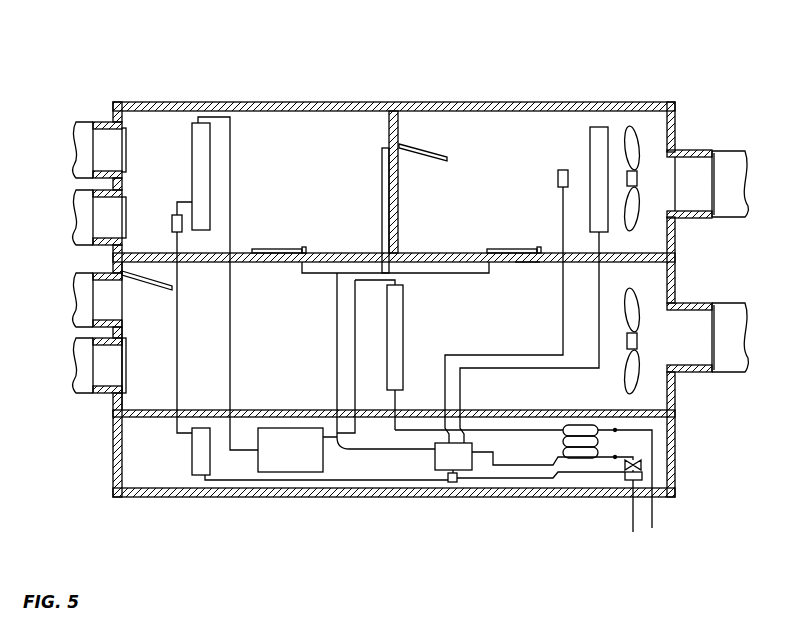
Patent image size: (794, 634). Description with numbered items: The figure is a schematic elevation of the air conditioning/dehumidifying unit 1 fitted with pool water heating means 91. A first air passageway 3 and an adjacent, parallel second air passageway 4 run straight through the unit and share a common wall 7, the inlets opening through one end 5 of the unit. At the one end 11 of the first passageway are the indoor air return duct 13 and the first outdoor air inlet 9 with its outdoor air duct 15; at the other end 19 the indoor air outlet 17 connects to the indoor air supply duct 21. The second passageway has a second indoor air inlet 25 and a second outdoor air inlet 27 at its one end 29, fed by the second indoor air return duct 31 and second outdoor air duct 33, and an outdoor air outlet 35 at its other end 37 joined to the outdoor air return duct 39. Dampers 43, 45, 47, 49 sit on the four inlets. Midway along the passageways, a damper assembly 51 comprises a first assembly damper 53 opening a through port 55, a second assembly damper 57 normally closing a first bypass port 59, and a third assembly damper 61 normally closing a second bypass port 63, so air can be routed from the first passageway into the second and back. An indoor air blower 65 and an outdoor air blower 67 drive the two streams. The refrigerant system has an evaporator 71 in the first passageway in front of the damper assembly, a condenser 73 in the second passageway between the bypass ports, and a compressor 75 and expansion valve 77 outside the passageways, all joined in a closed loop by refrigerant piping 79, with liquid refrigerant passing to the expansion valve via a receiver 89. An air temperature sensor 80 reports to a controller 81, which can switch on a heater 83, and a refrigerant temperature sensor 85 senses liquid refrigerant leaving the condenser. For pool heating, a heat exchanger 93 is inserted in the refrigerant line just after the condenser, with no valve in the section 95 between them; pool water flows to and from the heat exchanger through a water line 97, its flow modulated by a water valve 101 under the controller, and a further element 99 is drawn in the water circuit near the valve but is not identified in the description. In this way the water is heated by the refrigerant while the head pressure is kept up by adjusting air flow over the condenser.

The air conditioning/dehumidifying unit 1 is at (542, 97).
The first air passageway 3 is at (325, 117).
The second air passageway 4 is at (265, 378).
The one end of the unit 5 is at (115, 463).
The common wall 7 is at (93, 163).
The first outdoor air inlet 9 is at (92, 207).
The one end of the first air passageway 11 is at (113, 113).
The indoor air return duct 13 is at (72, 133).
The outdoor air duct 15 is at (82, 248).
The indoor air outlet 17 is at (713, 160).
The other end of the first air passageway 19 is at (673, 130).
The indoor air supply duct 21 is at (727, 203).
The second indoor air inlet 25 is at (92, 310).
The second outdoor air inlet 27 is at (92, 382).
The one end of the second air passageway 29 is at (115, 403).
The second indoor air return duct 31 is at (67, 285).
The second outdoor air duct 33 is at (70, 375).
The outdoor air outlet 35 is at (713, 315).
The other end of the second air passageway 37 is at (675, 270).
The outdoor air return duct 39 is at (727, 338).
The damper 43 is at (126, 153).
The damper 45 is at (127, 200).
The damper 47 is at (160, 290).
The damper 49 is at (128, 362).
The damper assembly 51 is at (304, 243).
The first assembly damper 53 is at (447, 158).
The through port 55 is at (385, 188).
The second assembly damper 57 is at (280, 250).
The first bypass port 59 is at (300, 260).
The third assembly damper 61 is at (507, 250).
The second bypass port 63 is at (528, 262).
The indoor air blower 65 is at (632, 137).
The outdoor air blower 67 is at (635, 378).
The evaporator 71 is at (210, 158).
The condenser 73 is at (403, 310).
The compressor 75 is at (297, 472).
The expansion valve 77 is at (171, 220).
The refrigerant piping 79 is at (355, 346).
The air temperature sensor 80 is at (558, 178).
The controller 81 is at (435, 462).
The heater 83 is at (590, 203).
The temperature sensor 85 is at (457, 481).
The receiver 89 is at (193, 478).
The pool water heating means 91 is at (634, 425).
The heat exchanger 93 is at (586, 426).
The section of line 95 is at (545, 428).
The water line 97 is at (655, 443).
The expansion device 99 is at (625, 478).
The water valve 101 is at (643, 465).